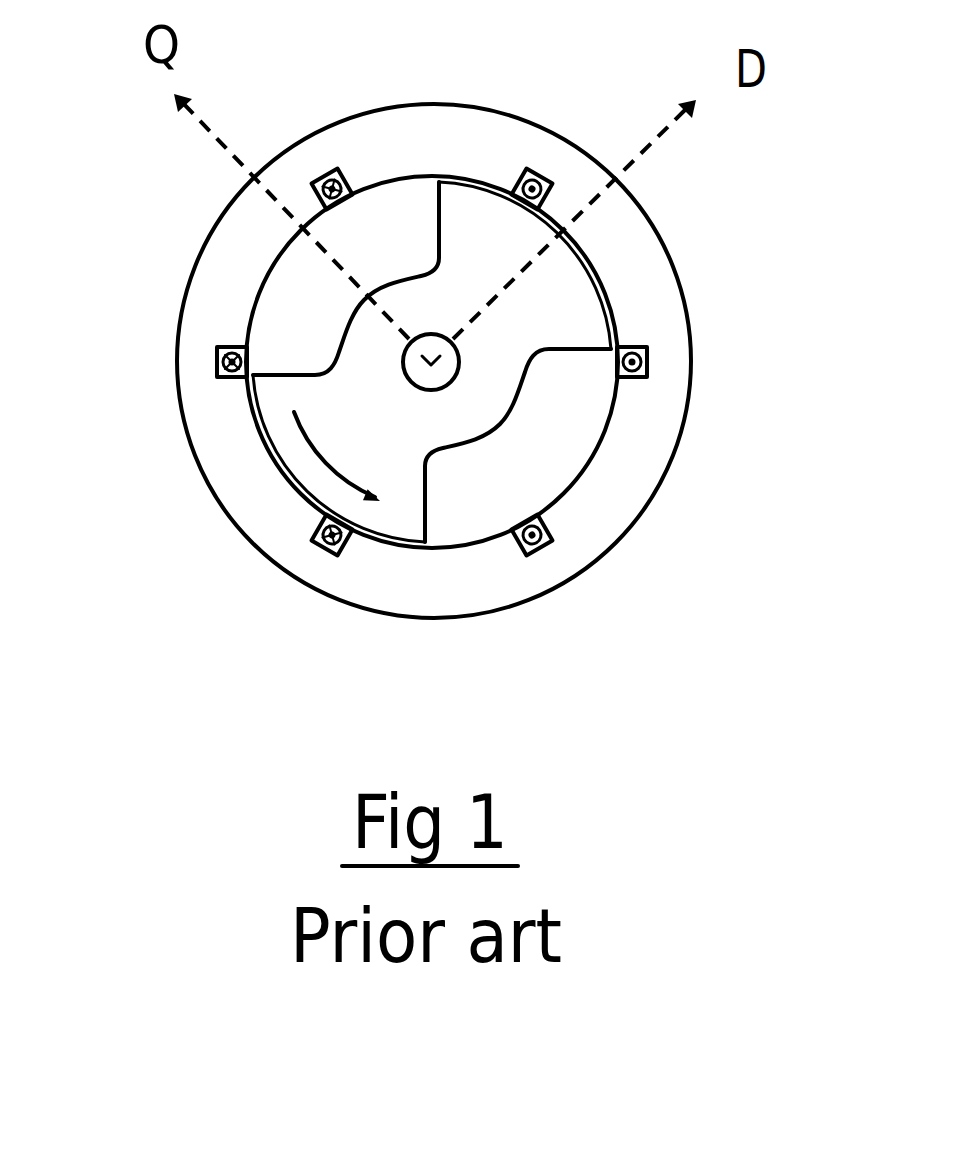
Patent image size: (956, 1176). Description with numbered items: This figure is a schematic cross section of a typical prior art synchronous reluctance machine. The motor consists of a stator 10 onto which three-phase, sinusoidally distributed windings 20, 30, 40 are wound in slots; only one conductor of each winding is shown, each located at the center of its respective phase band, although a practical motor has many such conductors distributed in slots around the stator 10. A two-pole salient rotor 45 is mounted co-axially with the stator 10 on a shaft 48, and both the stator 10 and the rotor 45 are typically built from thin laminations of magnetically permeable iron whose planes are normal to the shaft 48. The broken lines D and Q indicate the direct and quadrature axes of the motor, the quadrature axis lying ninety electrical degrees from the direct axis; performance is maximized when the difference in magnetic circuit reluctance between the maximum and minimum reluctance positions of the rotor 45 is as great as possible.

The stator 10 is at (227, 475).
The winding 20 is at (219, 350).
The winding 30 is at (328, 182).
The winding 40 is at (523, 178).
The two-pole salient rotor 45 is at (503, 398).
The shaft 48 is at (403, 360).